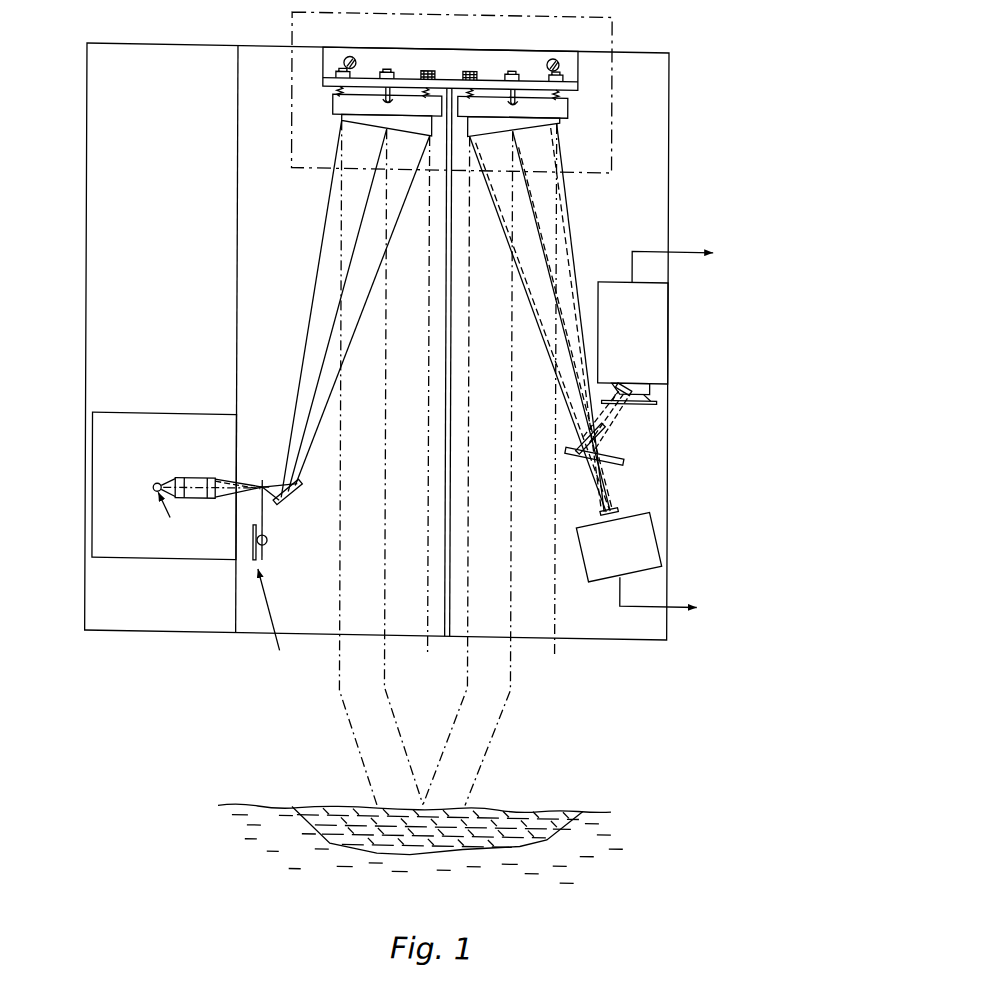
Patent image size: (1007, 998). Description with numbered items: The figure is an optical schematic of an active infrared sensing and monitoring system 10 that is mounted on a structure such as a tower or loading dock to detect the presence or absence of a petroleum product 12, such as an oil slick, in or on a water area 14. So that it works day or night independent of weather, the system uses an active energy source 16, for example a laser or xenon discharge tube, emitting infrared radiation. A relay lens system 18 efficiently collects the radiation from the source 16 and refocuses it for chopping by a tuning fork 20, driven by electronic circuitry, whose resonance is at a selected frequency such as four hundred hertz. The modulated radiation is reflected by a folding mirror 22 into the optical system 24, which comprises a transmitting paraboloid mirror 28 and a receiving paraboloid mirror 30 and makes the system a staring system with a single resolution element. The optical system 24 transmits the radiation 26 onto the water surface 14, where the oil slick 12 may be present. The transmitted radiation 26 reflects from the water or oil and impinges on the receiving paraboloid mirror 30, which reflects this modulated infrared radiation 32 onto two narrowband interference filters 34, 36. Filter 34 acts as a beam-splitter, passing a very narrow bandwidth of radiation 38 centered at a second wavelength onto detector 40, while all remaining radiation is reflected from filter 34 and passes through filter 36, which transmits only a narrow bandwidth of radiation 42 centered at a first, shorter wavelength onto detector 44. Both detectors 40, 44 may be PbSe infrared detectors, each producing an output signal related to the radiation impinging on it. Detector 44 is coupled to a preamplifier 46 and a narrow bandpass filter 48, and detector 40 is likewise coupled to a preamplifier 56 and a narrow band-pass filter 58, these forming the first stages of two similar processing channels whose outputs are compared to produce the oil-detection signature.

The sensing and monitoring system 10 is at (669, 88).
The petroleum product 12 is at (331, 803).
The water area 14 is at (258, 802).
The active energy source 16 is at (156, 485).
The relay lens system 18 is at (178, 477).
The tuning fork 20 is at (267, 524).
The folding mirror 22 is at (296, 496).
The optical system 24 is at (292, 26).
The transmitted radiation 26 is at (340, 539).
The transmitting paraboloid mirror 28 is at (342, 116).
The receiving paraboloid mirror 30 is at (560, 114).
The reflected modulated infrared radiation 32 is at (472, 539).
The narrowband interference filter 34 is at (630, 451).
The narrowband interference filter 36 is at (660, 394).
The radiation centered at wavelength lambda two 38 is at (591, 465).
The detector 40 is at (624, 513).
The radiation centered at wavelength lambda one 42 is at (612, 384).
The detector 44 is at (631, 382).
The preamplifier 46 is at (656, 298).
The narrow bandpass filter 48 is at (722, 255).
The preamplifier 56 is at (652, 515).
The narrow band-pass filter 58 is at (716, 610).